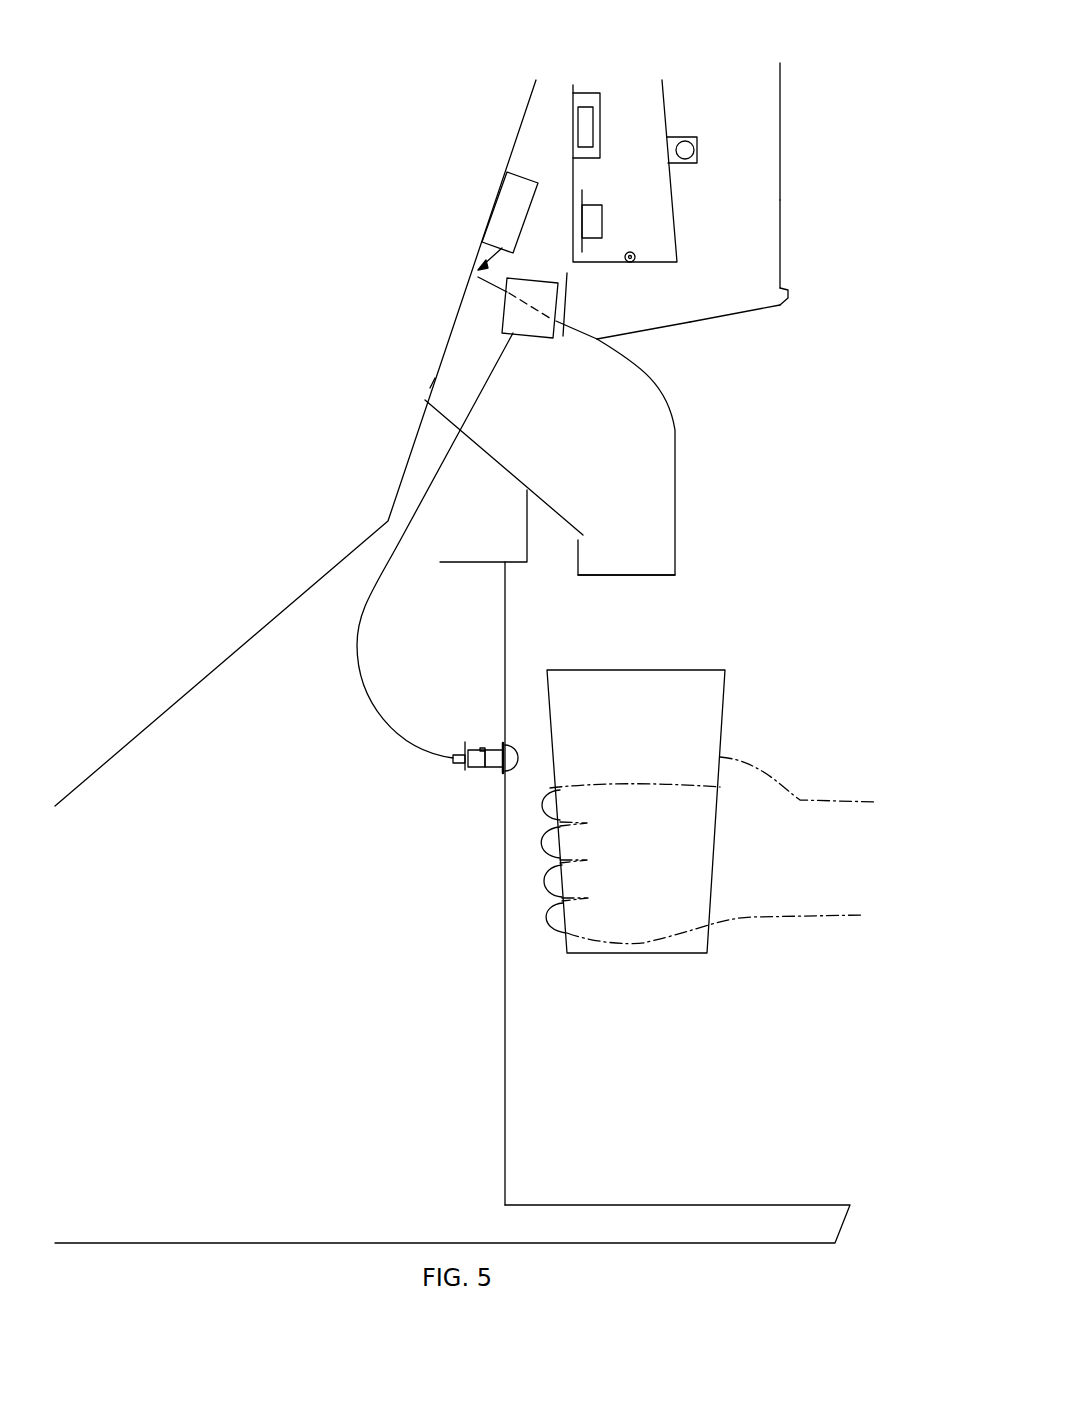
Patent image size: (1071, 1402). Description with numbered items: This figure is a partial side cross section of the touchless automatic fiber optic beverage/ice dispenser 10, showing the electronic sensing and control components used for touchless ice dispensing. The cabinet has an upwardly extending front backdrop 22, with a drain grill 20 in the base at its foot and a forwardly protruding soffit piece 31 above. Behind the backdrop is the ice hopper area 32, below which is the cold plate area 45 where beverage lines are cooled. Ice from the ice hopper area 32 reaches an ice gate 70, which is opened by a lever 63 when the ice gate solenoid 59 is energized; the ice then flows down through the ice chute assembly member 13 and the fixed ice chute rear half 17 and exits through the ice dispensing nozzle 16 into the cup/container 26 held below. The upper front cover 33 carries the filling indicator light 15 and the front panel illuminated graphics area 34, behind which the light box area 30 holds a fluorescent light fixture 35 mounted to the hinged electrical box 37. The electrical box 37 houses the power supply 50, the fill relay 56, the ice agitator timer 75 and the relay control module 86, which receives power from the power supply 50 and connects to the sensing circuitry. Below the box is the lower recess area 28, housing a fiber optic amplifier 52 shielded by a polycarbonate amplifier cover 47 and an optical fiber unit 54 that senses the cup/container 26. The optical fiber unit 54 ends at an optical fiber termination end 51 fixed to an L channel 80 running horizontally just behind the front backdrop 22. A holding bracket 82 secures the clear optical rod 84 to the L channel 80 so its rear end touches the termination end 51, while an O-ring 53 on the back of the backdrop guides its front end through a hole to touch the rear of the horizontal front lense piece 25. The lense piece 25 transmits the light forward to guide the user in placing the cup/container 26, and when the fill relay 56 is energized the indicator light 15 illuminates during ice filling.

The touchless automatic fiber optic beverage/ice dispenser 10 is at (803, 370).
The ice chute assembly member 13 is at (676, 513).
The filling indicator light 15 is at (783, 290).
The ice dispensing nozzle 16 is at (645, 575).
The fixed ice chute rear half 17 is at (535, 490).
The drain grill 20 is at (802, 1205).
The front backdrop 22 is at (507, 1107).
The horizontal front lense piece 25 is at (512, 747).
The cup/container 26 is at (680, 953).
The lower recess area 28 is at (670, 317).
The light box area 30 is at (773, 90).
The soffit piece 31 is at (517, 567).
The ice hopper area 32 is at (223, 485).
The upper front cover 33 is at (737, 317).
The front panel illuminated graphics area 34 is at (780, 135).
The fluorescent light fixture 35 is at (690, 137).
The hinged electrical box 37 is at (677, 223).
The cold plate area 45 is at (205, 1053).
The polycarbonate amplifier cover 47 is at (570, 298).
The power supply 50 is at (602, 123).
The optical fiber termination end 51 is at (457, 770).
The fiber optic amplifier 52 is at (555, 270).
The O-ring 53 is at (500, 747).
The optical fiber unit 54 is at (357, 662).
The fill relay 56 is at (603, 218).
The ice gate solenoid 59 is at (517, 172).
The lever 63 is at (527, 223).
The ice gate 70 is at (452, 340).
The ice agitator timer 75 is at (587, 105).
The L channel 80 is at (463, 748).
The holding bracket 82 is at (473, 747).
The clear optical rod 84 is at (497, 773).
The relay control module 86 is at (583, 190).